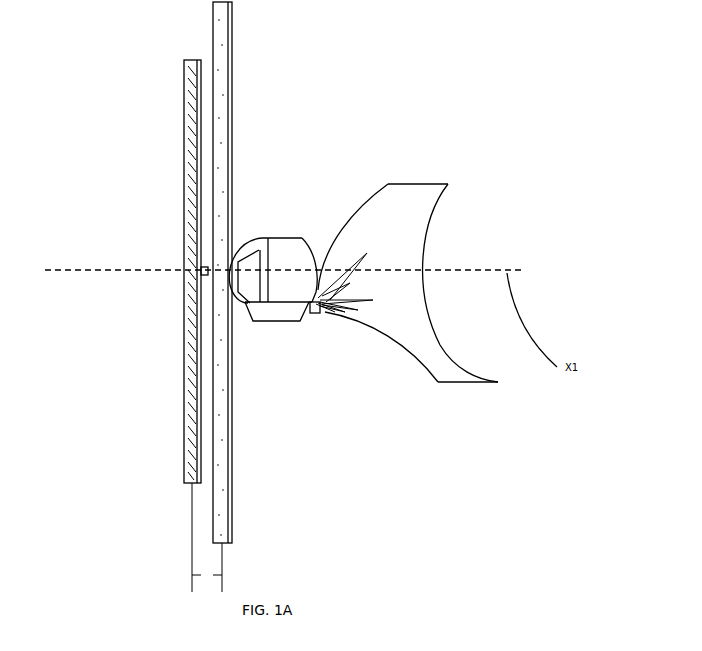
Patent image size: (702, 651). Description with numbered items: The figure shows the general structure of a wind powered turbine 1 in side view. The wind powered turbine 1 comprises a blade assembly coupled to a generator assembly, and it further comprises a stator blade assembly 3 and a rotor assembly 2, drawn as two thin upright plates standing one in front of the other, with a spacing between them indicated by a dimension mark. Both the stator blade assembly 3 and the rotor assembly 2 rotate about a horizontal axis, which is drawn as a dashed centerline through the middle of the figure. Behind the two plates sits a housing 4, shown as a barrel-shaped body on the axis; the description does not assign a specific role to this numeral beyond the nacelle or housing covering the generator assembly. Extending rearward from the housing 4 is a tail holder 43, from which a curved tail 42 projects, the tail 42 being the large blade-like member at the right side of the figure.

The wind powered turbine 1 is at (98, 148).
The rotor assembly 2 is at (188, 403).
The stator blade assembly 3 is at (217, 47).
The nozzle 4 is at (293, 238).
The tail 42 is at (403, 243).
The tail holder 43 is at (316, 304).